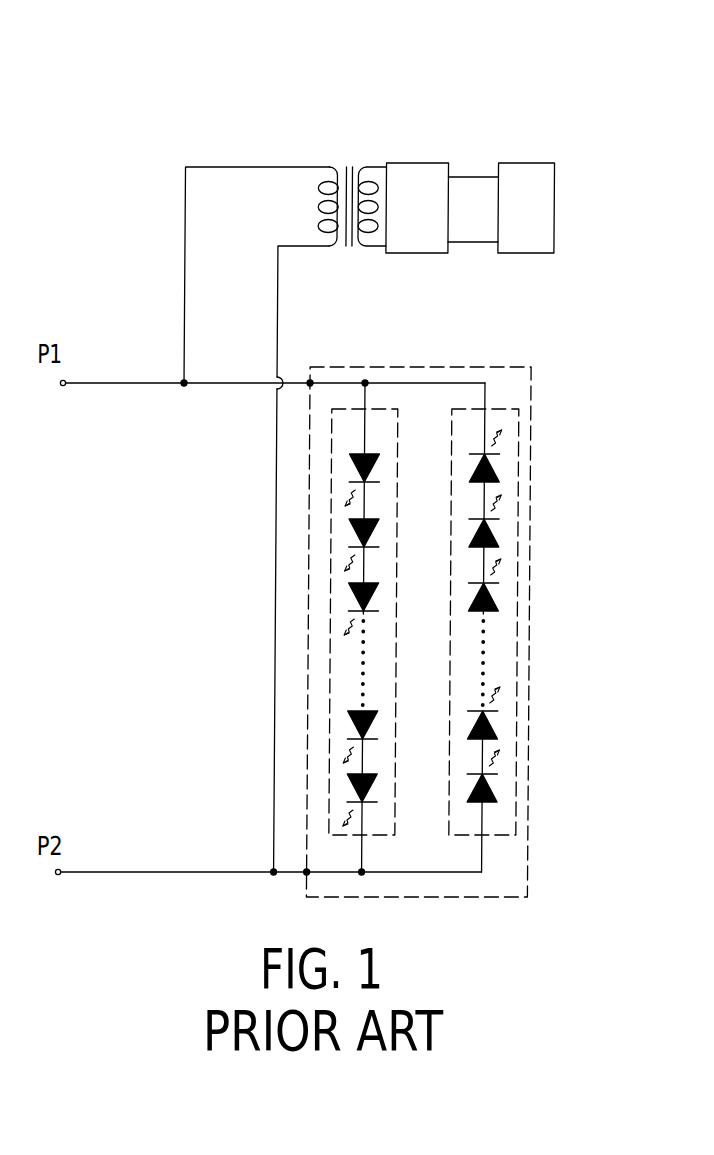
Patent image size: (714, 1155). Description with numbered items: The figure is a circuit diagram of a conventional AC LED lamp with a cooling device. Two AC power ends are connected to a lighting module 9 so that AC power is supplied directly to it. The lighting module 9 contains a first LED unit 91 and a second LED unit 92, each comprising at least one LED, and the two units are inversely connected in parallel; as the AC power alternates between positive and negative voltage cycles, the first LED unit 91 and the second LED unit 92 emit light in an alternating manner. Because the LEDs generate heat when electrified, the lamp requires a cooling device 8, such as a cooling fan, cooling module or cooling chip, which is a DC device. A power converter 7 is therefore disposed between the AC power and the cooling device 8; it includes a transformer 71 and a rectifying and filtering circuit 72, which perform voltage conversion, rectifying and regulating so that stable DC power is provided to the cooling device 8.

The power converter 7 is at (410, 55).
The transformer 71 is at (342, 165).
The rectifying and filtering circuit 72 is at (408, 163).
The cooling device 8 is at (525, 163).
The lighting module 9 is at (532, 555).
The first LED unit 91 is at (392, 408).
The second LED unit 92 is at (500, 408).